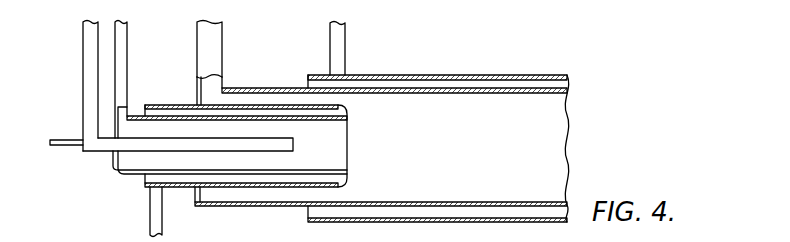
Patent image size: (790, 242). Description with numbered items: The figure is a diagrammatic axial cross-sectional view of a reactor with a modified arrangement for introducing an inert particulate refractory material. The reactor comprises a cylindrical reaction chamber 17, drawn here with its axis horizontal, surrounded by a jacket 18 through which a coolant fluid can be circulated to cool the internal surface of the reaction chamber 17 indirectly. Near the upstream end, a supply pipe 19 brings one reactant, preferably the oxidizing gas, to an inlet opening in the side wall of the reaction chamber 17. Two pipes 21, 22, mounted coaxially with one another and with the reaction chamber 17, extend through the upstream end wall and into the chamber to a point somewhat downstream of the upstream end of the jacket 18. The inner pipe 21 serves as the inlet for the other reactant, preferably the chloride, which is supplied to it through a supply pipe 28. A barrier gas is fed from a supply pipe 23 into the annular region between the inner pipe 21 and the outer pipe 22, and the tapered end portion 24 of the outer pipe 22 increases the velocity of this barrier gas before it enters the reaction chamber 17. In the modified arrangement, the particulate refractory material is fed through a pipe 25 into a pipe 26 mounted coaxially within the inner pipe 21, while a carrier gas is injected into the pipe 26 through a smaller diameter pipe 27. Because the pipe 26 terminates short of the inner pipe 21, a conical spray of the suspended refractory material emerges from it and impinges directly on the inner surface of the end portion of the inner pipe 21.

The reaction chamber 17 is at (432, 92).
The jacket 18 is at (492, 77).
The supply pipe 19 is at (204, 66).
The inner pipe 21 is at (252, 116).
The outer pipe 22 is at (226, 195).
The supply pipe 23 is at (150, 212).
The end portion 24 is at (347, 112).
The pipe 25 is at (88, 72).
The pipe 26 is at (101, 151).
The smaller diameter pipe 27 is at (77, 139).
The supply pipe 28 is at (122, 50).